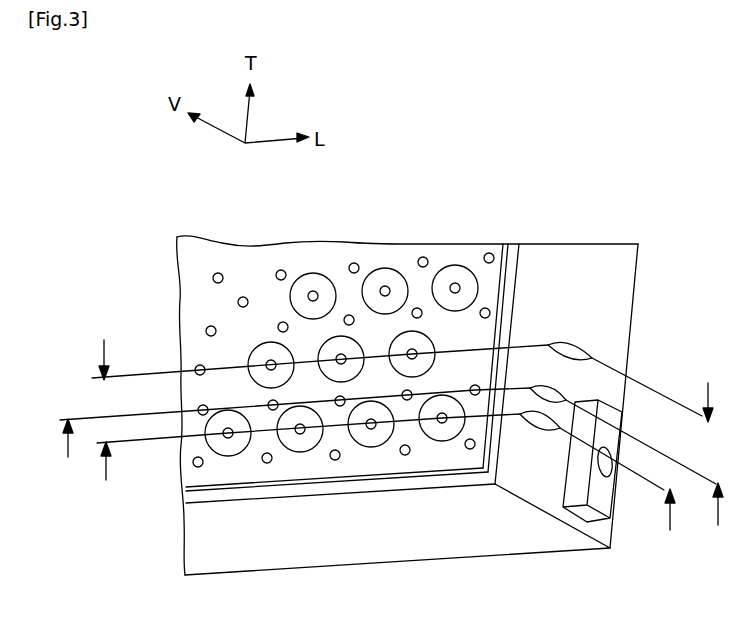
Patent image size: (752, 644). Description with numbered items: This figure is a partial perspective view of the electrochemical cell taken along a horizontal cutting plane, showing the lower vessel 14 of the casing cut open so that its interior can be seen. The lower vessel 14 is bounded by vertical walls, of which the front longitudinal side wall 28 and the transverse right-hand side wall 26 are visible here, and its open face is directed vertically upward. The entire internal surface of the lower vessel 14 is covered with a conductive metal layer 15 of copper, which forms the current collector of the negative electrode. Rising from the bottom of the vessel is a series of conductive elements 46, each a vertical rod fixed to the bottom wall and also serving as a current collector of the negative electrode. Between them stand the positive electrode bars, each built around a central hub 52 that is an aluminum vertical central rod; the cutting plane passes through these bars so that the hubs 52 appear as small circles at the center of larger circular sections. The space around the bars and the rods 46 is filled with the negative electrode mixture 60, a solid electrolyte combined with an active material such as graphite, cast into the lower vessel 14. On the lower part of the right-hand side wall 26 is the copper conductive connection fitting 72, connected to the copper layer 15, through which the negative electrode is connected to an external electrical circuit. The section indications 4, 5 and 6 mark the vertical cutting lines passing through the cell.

The lower vessel 14 is at (595, 257).
The conductive metal layer 15 is at (498, 282).
The right-hand side wall 26 is at (597, 287).
The front longitudinal side wall 28 is at (440, 515).
The conductive elements 46 is at (424, 257).
The central hub 52 is at (392, 286).
The negative electrode mixture 60 is at (322, 272).
The conductive connection fitting 72 is at (626, 488).
The section line IV 4 is at (388, 456).
The section line V 5 is at (383, 473).
The section line VI 6 is at (403, 379).